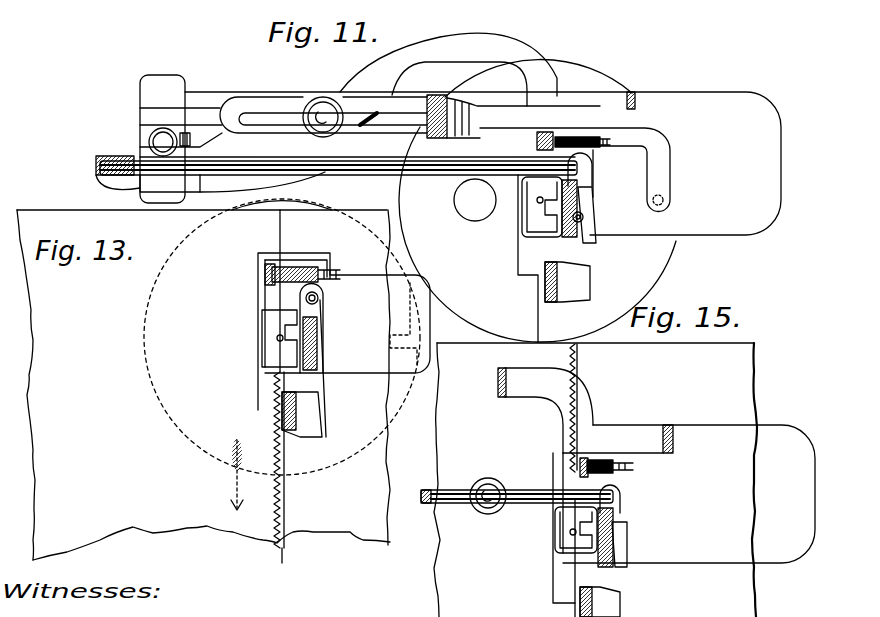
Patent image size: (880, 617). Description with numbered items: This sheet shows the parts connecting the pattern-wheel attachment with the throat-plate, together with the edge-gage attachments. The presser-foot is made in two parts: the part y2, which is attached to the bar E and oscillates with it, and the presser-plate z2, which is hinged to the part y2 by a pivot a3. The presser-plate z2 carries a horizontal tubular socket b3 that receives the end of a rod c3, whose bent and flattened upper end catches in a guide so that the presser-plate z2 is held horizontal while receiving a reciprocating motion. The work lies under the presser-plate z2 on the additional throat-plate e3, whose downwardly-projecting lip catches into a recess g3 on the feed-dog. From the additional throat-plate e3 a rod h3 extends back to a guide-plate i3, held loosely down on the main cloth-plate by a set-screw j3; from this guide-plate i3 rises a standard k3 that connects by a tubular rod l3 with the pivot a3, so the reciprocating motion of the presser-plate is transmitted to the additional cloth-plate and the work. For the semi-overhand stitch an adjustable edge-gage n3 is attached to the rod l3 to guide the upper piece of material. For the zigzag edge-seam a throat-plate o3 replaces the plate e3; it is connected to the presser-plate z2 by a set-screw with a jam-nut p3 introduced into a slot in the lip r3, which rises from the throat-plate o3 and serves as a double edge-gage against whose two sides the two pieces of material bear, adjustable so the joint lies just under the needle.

In FIG. 11, the standard k3 is at (103, 156).
In FIG. 11, the set-screw j3 is at (192, 142).
In FIG. 11, the guide-plate i3 is at (460, 200).
In FIG. 11, the tubular rod l3 is at (395, 163).
In FIG. 15, the tubular rod l3 is at (533, 504).
In FIG. 11, the rod h3 is at (470, 69).
In FIG. 15, the rod h3 is at (545, 410).
In FIG. 11, the jam-nut p3 is at (548, 138).
In FIG. 13, the jam-nut p3 is at (284, 268).
In FIG. 15, the jam-nut p3 is at (585, 466).
In FIG. 11, the recess g3 is at (610, 143).
In FIG. 13, the recess g3 is at (330, 272).
In FIG. 15, the recess g3 is at (633, 468).
In FIG. 11, the presser-plate z2 is at (592, 168).
In FIG. 13, the presser-plate z2 is at (327, 300).
In FIG. 15, the presser-plate z2 is at (621, 504).
In FIG. 11, the horizontal tubular socket b3 is at (580, 192).
In FIG. 13, the horizontal tubular socket b3 is at (318, 342).
In FIG. 15, the horizontal tubular socket b3 is at (610, 527).
In FIG. 11, the rod c3 is at (590, 216).
In FIG. 11, the part of presser-foot y2 is at (596, 226).
In FIG. 13, the part of presser-foot y2 is at (322, 318).
In FIG. 15, the part of presser-foot y2 is at (628, 541).
In FIG. 13, the lip r3 is at (294, 313).
In FIG. 13, the pivot a3 is at (318, 298).
In FIG. 13, the throat-plate o3 is at (344, 331).
In FIG. 13, the presser-foot bar E is at (327, 403).
In FIG. 15, the adjustable edge-gage n3 is at (538, 490).
In FIG. 15, the additional throat-plate e3 is at (684, 514).